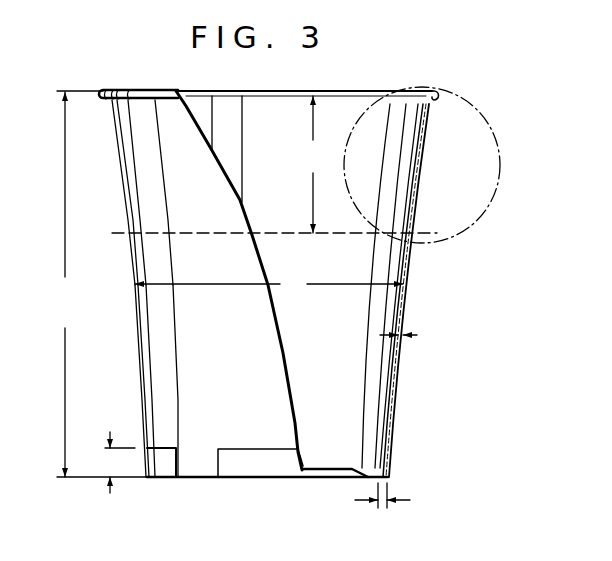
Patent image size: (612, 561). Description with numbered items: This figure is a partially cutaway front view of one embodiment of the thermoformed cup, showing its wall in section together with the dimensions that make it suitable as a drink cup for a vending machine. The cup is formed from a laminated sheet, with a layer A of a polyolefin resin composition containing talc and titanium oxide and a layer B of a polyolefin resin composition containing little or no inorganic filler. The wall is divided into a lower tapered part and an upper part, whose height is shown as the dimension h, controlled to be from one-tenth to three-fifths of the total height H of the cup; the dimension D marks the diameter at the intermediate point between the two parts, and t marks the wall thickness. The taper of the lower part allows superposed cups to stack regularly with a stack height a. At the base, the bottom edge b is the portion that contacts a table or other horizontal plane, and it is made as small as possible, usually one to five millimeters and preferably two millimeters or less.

The layer of polyolefin resin composition A is at (153, 352).
The layer of polyolefin resin composition B is at (135, 187).
The total height of the cup H is at (102, 284).
The height of upper portion from rim to transition h is at (313, 164).
The diameter of cup at transition D is at (269, 285).
The stack height a is at (120, 462).
The bottom edge of the cup b is at (388, 495).
The side wall thickness t is at (405, 335).